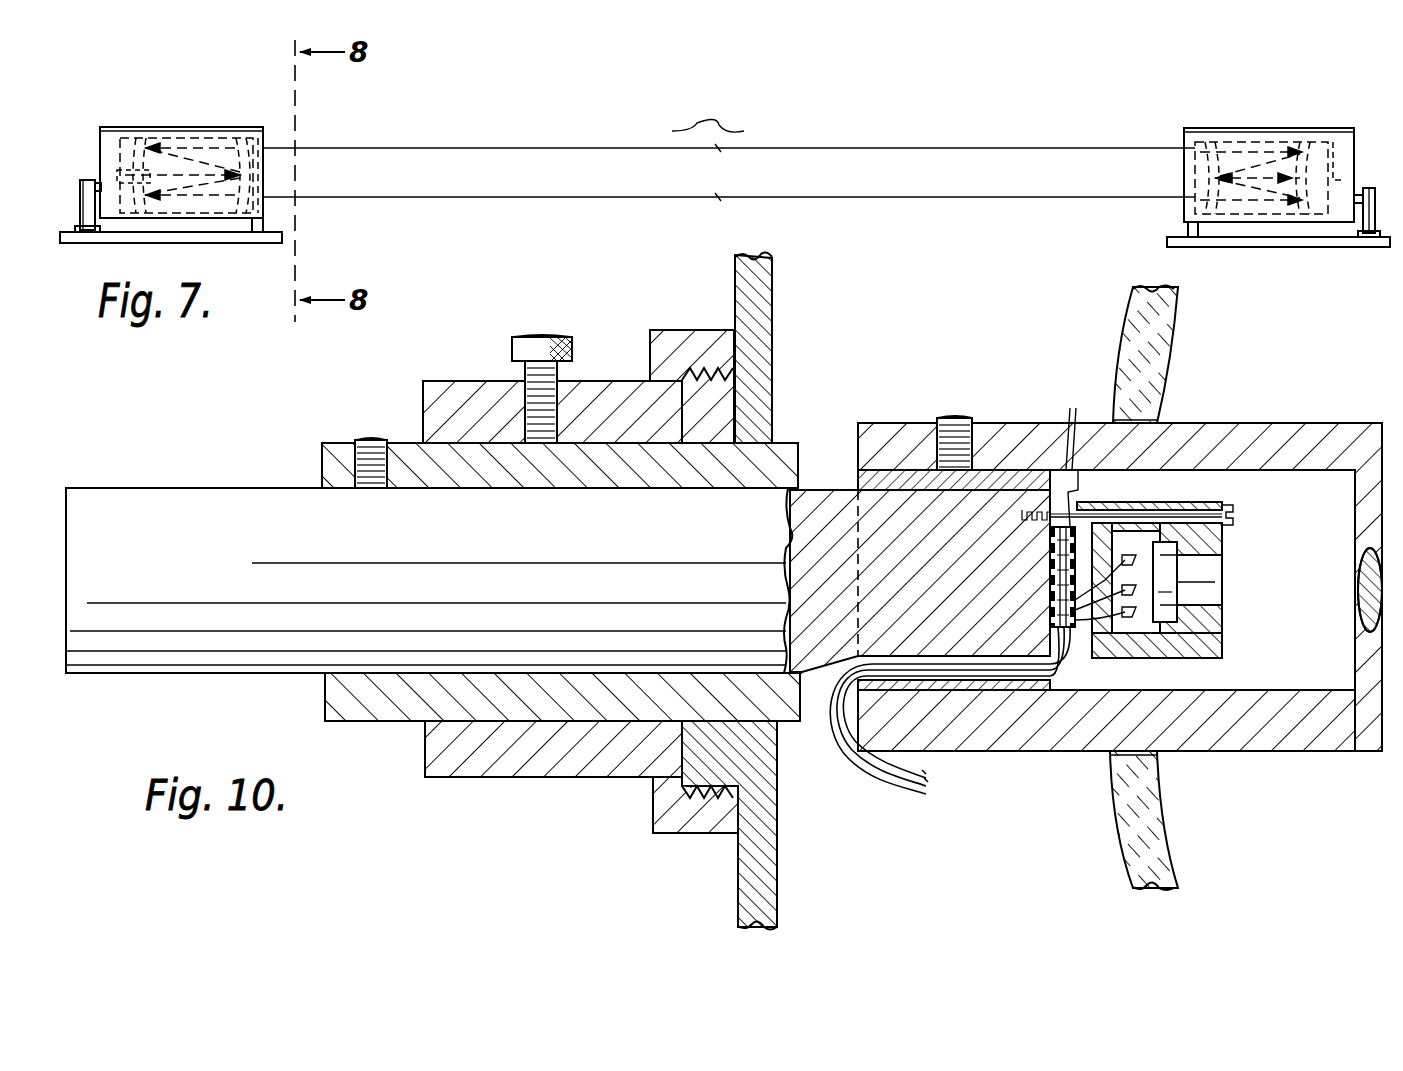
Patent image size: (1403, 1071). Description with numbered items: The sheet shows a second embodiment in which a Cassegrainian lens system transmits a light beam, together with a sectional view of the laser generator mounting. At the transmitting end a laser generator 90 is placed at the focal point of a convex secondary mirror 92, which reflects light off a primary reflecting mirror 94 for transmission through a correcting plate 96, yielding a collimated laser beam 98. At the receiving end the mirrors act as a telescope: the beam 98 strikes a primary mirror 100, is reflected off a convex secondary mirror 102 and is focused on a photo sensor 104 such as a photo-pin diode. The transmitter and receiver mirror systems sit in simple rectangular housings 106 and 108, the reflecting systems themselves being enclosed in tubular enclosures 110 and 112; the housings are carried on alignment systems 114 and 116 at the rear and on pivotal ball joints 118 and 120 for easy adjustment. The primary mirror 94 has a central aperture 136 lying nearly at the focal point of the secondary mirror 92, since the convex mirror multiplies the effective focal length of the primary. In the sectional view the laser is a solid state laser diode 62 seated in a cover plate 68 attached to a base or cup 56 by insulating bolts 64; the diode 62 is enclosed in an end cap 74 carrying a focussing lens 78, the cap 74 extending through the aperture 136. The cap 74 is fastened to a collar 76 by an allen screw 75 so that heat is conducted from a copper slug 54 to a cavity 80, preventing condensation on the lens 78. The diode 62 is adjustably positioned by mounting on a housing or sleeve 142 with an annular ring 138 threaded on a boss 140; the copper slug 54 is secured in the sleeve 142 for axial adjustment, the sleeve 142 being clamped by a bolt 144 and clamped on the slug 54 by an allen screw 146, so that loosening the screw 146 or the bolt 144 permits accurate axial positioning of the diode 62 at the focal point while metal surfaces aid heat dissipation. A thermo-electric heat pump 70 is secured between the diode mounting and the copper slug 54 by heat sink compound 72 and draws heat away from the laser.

In FIG. 10, the copper slug 54 is at (266, 502).
In FIG. 10, the base or cup 56 is at (1105, 500).
In FIG. 10, the solid state laser diode 62 is at (1205, 578).
In FIG. 10, the insulating bolts 64 is at (1235, 510).
In FIG. 10, the cover plate 68 is at (1212, 630).
In FIG. 10, the thermo-electric heat pump 70 is at (1060, 680).
In FIG. 10, the heat sink compound 72 is at (1074, 410).
In FIG. 10, the end cap 74 is at (1262, 423).
In FIG. 10, the allen screw 75 is at (940, 418).
In FIG. 10, the collar 76 is at (896, 470).
In FIG. 10, the focussing lens 78 is at (1358, 584).
In FIG. 10, the cavity 80 is at (1318, 648).
In FIG. 7, the laser generator 90 is at (120, 170).
In FIG. 10, the laser generator 90 is at (1090, 752).
In FIG. 7, the secondary mirror 92 is at (237, 160).
In FIG. 7, the primary reflecting mirror 94 is at (140, 178).
In FIG. 10, the primary reflecting mirror 94 is at (1160, 358).
In FIG. 7, the correcting plate 96 is at (265, 172).
In FIG. 7, the collimated laser beam 98 is at (490, 158).
In FIG. 7, the primary mirror 100 is at (1305, 150).
In FIG. 7, the secondary mirror 102 is at (1210, 150).
In FIG. 7, the photo sensor 104 is at (1340, 150).
In FIG. 7, the housing 106 is at (184, 218).
In FIG. 7, the housing 108 is at (1260, 222).
In FIG. 7, the tubular enclosure 110 is at (190, 218).
In FIG. 10, the tubular enclosure 110 is at (778, 840).
In FIG. 7, the tubular enclosure 112 is at (1290, 222).
In FIG. 7, the alignment system 114 is at (82, 183).
In FIG. 7, the alignment system 116 is at (1370, 240).
In FIG. 7, the pivotal ball joint 118 is at (265, 222).
In FIG. 7, the pivotal ball joint 120 is at (1183, 224).
In FIG. 10, the central aperture 136 is at (1150, 752).
In FIG. 10, the annular ring 138 is at (474, 380).
In FIG. 10, the boss 140 is at (710, 362).
In FIG. 10, the sleeve 142 is at (408, 724).
In FIG. 10, the bolt 144 is at (530, 336).
In FIG. 10, the allen screw 146 is at (372, 438).